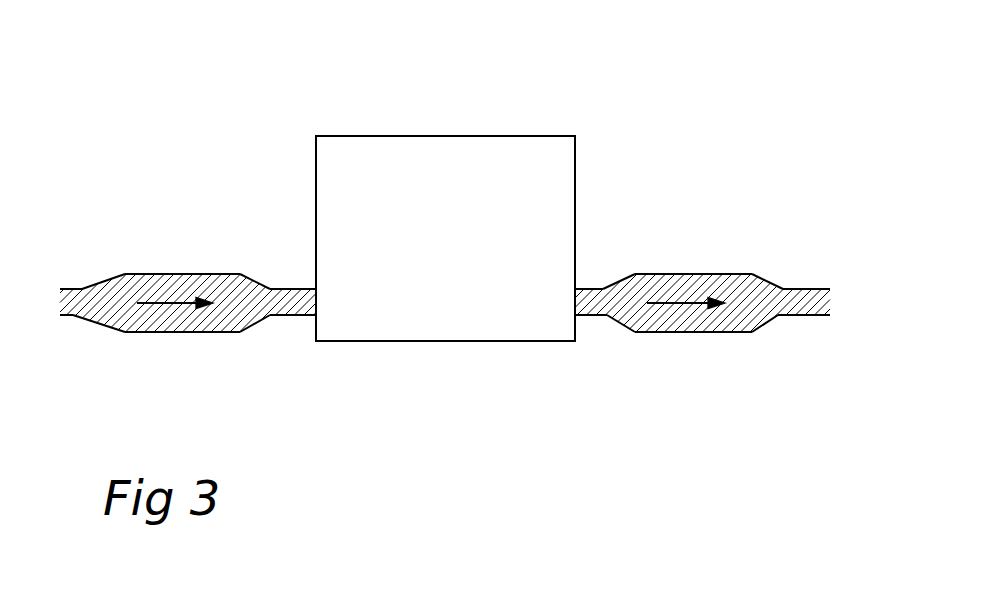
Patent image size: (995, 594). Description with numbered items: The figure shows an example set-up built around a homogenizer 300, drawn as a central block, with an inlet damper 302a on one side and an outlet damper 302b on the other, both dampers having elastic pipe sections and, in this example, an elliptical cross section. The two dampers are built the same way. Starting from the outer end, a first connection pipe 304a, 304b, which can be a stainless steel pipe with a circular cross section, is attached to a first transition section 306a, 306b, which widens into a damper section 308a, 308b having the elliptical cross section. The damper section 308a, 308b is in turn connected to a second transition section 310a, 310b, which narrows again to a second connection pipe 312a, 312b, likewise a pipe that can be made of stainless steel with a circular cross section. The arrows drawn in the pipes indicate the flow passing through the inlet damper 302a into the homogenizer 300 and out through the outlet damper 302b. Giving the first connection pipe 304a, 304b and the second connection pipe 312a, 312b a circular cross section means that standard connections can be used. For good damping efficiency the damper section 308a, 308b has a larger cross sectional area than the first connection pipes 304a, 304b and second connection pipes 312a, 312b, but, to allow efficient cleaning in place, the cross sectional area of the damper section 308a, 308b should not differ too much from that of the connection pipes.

The homogenizer 300 is at (413, 156).
The inlet damper 302a is at (175, 209).
The outlet damper 302b is at (705, 209).
The first connection pipe 304a is at (80, 316).
The first connection pipe 304b is at (603, 316).
The first transition section 306a is at (108, 287).
The first transition section 306b is at (624, 288).
The damper section 308a is at (170, 272).
The damper section 308b is at (688, 272).
The second transition section 310a is at (258, 288).
The second transition section 310b is at (771, 288).
The second connection pipe 312a is at (287, 316).
The second connection pipe 312b is at (805, 316).